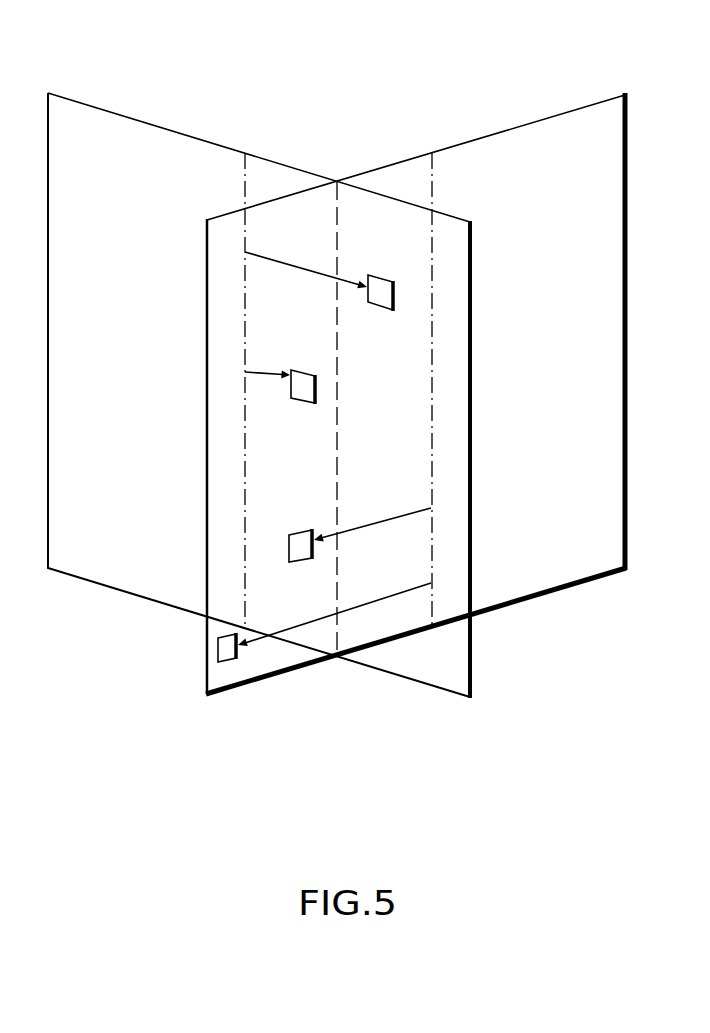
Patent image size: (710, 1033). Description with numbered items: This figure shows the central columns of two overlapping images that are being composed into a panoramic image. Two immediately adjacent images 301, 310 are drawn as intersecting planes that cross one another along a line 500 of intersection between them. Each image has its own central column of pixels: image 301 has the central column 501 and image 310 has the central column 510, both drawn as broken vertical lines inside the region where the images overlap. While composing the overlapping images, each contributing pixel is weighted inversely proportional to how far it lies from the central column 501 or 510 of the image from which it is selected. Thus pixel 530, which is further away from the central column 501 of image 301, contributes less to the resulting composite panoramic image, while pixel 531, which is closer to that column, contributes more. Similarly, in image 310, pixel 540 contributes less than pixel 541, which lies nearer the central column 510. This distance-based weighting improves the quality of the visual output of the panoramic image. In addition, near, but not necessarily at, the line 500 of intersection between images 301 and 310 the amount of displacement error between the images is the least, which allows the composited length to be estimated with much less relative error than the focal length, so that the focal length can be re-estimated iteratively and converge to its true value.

The image 301 is at (132, 118).
The image 310 is at (605, 100).
The line of intersection 500 is at (337, 200).
The central column of pixels 501 is at (243, 193).
The central column of pixels 510 is at (433, 193).
The pixel 530 is at (395, 300).
The pixel 531 is at (316, 395).
The pixel 540 is at (228, 663).
The pixel 541 is at (300, 563).